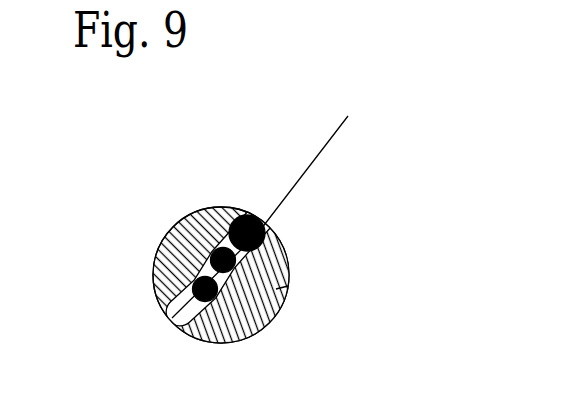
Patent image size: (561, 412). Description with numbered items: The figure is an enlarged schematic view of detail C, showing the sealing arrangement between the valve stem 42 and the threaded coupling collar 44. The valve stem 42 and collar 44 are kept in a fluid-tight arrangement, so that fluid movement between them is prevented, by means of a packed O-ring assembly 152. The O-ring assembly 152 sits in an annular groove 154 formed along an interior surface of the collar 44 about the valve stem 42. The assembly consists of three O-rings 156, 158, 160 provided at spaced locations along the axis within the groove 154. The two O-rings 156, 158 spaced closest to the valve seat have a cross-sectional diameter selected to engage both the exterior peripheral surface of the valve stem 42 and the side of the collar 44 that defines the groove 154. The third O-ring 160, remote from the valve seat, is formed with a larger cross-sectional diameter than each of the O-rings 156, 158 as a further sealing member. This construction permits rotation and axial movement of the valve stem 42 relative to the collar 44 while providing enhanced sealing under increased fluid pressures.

The valve stem 42 is at (198, 230).
The threaded coupling collar 44 is at (287, 270).
The packed O-ring assembly 152 is at (247, 212).
The annular groove 154 is at (182, 332).
The O-ring 156 is at (196, 285).
The O-ring 158 is at (168, 258).
The third O-ring 160 is at (272, 230).
The detail C is at (271, 202).